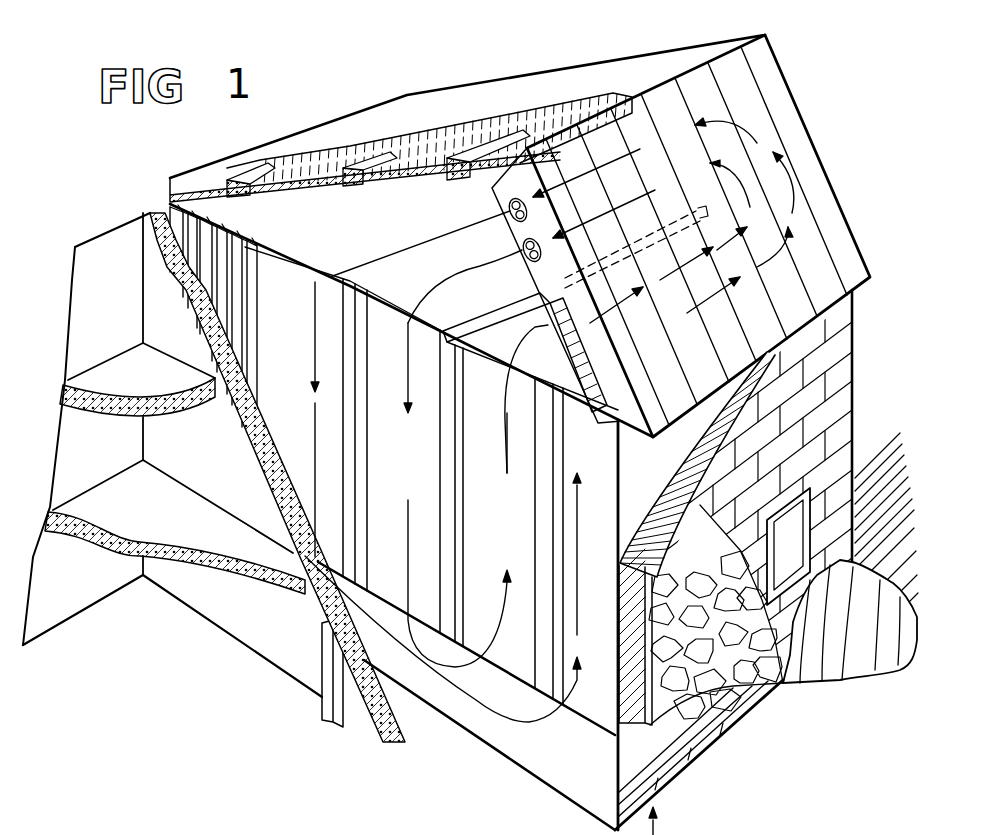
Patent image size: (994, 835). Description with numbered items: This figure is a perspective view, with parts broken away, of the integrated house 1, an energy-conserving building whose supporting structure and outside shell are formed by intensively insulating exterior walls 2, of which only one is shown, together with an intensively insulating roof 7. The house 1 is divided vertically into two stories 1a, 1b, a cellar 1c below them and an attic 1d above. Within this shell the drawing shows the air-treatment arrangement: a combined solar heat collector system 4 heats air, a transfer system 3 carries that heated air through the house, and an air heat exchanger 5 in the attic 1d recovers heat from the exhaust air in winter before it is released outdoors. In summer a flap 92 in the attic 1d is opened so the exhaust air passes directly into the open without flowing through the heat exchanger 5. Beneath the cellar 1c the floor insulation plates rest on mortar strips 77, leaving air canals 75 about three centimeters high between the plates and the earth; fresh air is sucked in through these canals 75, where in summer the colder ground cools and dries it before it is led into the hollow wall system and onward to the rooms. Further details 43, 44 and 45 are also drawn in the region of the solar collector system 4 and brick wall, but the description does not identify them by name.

The integrated house 1 is at (256, 684).
The story 1a is at (127, 331).
The story 1b is at (117, 460).
The cellar 1c is at (94, 594).
The attic 1d is at (385, 218).
The intensively insulating exterior wall 2 is at (617, 625).
The transfer system 3 is at (300, 386).
The combined solar heat collector system 4 is at (797, 138).
The air heat exchanger 5 is at (170, 210).
The intensively insulating roof 7 is at (368, 117).
The ventilation fans 43 is at (524, 248).
The duct support bar 44 is at (513, 305).
The window 45 is at (797, 521).
The air canal 75 is at (652, 790).
The mortar strip 77 is at (692, 730).
The flap 92 is at (601, 402).